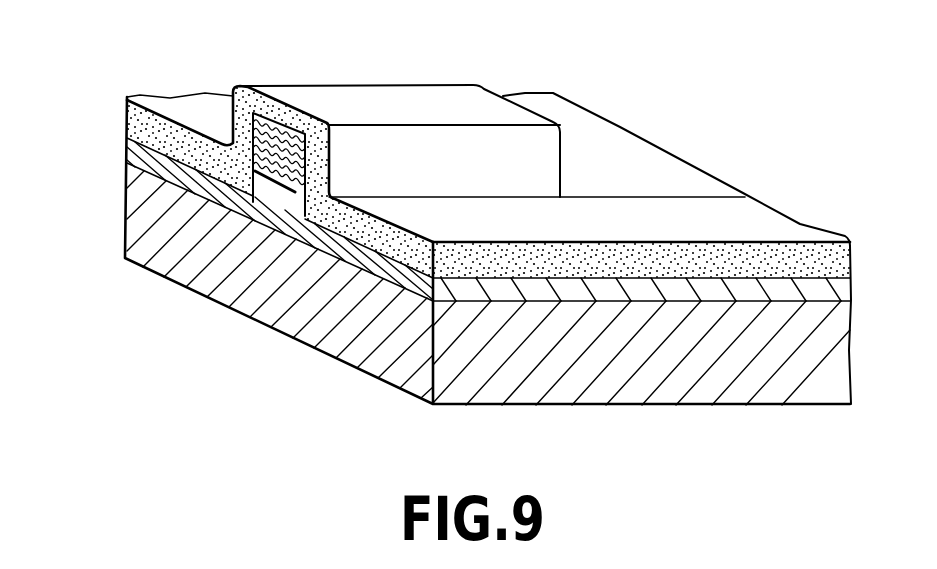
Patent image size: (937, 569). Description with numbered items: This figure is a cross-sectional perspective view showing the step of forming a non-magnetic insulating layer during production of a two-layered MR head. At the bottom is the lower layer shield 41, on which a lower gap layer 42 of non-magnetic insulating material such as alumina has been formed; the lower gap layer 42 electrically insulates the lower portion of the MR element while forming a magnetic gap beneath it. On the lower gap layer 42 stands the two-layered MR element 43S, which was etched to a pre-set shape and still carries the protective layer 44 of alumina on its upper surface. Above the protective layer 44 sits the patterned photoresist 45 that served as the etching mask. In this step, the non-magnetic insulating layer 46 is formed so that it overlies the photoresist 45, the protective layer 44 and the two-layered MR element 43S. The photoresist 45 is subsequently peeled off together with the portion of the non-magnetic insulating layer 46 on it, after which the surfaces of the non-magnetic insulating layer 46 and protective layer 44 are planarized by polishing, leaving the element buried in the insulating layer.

The lower layer shield 41 is at (127, 218).
The lower gap layer 42 is at (125, 156).
The two-layered MR element 43S is at (258, 192).
The protective layer 44 is at (277, 180).
The photoresist 45 is at (273, 120).
The non-magnetic insulating layer 46 is at (128, 121).